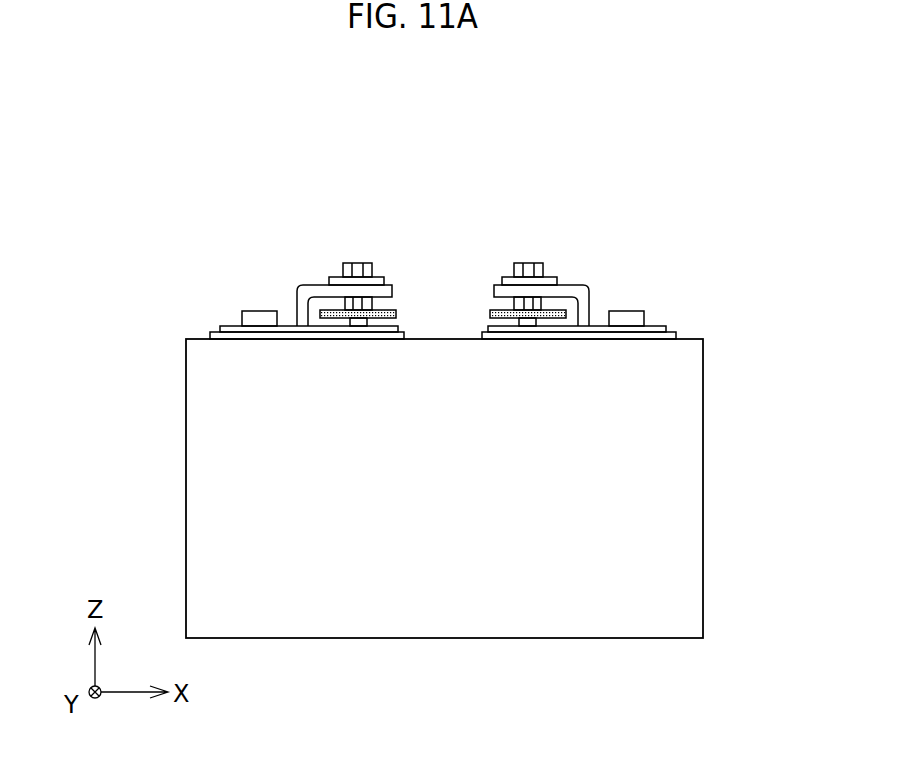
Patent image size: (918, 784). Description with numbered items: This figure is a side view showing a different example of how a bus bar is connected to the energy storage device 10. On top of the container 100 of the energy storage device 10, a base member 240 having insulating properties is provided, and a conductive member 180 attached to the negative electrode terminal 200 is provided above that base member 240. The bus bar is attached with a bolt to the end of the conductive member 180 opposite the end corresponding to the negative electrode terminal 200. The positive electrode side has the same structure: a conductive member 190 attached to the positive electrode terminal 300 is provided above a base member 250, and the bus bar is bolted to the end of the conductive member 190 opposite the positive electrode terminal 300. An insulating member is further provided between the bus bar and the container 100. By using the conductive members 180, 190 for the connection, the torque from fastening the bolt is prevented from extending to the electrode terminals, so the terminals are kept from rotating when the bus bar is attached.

The energy storage device 10 is at (688, 195).
The container 100 is at (703, 383).
The conductive member 180 is at (300, 286).
The conductive member 190 is at (588, 286).
The negative electrode terminal 200 is at (252, 311).
The base member 240 is at (210, 333).
The base member 250 is at (675, 333).
The positive electrode terminal 300 is at (633, 311).